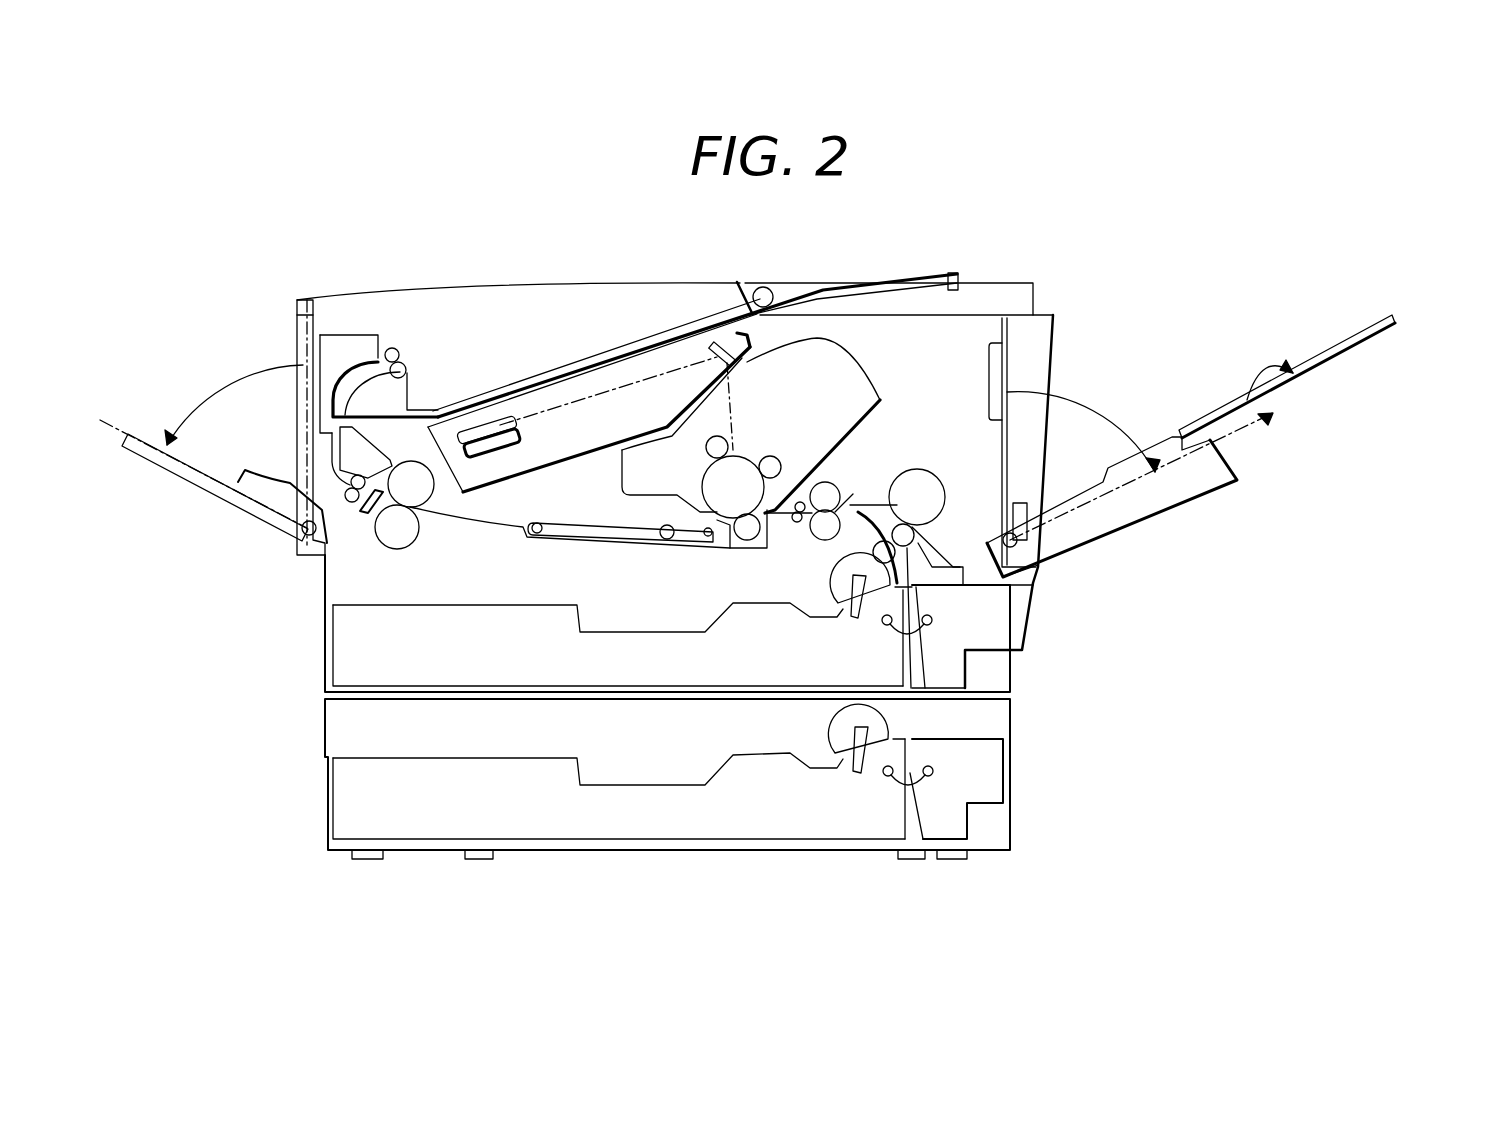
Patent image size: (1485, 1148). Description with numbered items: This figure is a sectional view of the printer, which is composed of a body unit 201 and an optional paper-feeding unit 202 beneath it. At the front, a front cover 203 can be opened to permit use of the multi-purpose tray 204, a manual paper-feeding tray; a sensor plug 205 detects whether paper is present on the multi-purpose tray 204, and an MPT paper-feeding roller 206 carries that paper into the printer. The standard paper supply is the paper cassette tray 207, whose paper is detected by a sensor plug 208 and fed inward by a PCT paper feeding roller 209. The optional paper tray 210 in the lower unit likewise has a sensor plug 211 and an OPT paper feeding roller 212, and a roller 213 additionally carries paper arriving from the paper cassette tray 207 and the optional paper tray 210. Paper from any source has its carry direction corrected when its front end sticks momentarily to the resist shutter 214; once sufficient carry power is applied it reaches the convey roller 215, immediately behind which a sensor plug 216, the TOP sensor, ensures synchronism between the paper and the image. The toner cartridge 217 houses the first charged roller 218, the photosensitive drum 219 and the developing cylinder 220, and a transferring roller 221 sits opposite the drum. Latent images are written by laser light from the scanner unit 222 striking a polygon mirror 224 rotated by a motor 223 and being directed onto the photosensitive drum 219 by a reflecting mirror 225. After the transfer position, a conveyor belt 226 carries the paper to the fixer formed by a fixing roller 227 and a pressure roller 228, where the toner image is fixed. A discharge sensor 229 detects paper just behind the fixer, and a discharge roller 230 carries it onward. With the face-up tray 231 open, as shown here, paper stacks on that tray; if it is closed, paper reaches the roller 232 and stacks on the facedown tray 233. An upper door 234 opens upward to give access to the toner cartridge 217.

The body unit 201 is at (1402, 681).
The optional paper-feeding unit 202 is at (1402, 852).
The front cover 203 is at (1130, 527).
The multi-purpose tray (MPT) 204 is at (1337, 347).
The sensor plug 205 is at (1020, 506).
The MPT paper-feeding roller 206 is at (925, 470).
The paper cassette tray (PCT) 207 is at (929, 626).
The sensor plug 208 is at (856, 620).
The PCT paper feeding roller 209 is at (800, 603).
The optional paper tray (OPT) 210 is at (933, 777).
The sensor plug 211 is at (857, 773).
The OPT paper feeding roller 212 is at (833, 731).
The roller 213 is at (935, 586).
The resist shutter 214 is at (840, 482).
The convey roller 215 is at (832, 445).
The sensor plug (TOP sensor) 216 is at (799, 523).
The toner cartridge 217 is at (880, 380).
The first charged roller 218 is at (702, 455).
The photosensitive drum 219 is at (748, 455).
The developing cylinder 220 is at (780, 456).
The transferring roller 221 is at (637, 372).
The scanner unit 222 is at (550, 468).
The motor 223 is at (515, 442).
The polygon mirror 224 is at (473, 417).
The reflecting mirror 225 is at (723, 330).
The conveyor belt 226 is at (627, 528).
The fixing roller 227 is at (433, 503).
The pressure roller 228 is at (420, 548).
The discharge sensor 229 is at (370, 518).
The discharge roller 230 is at (352, 503).
The face-up tray 231 is at (235, 510).
The roller 232 is at (392, 348).
The facedown tray 233 is at (550, 372).
The upper door 234 is at (1005, 283).